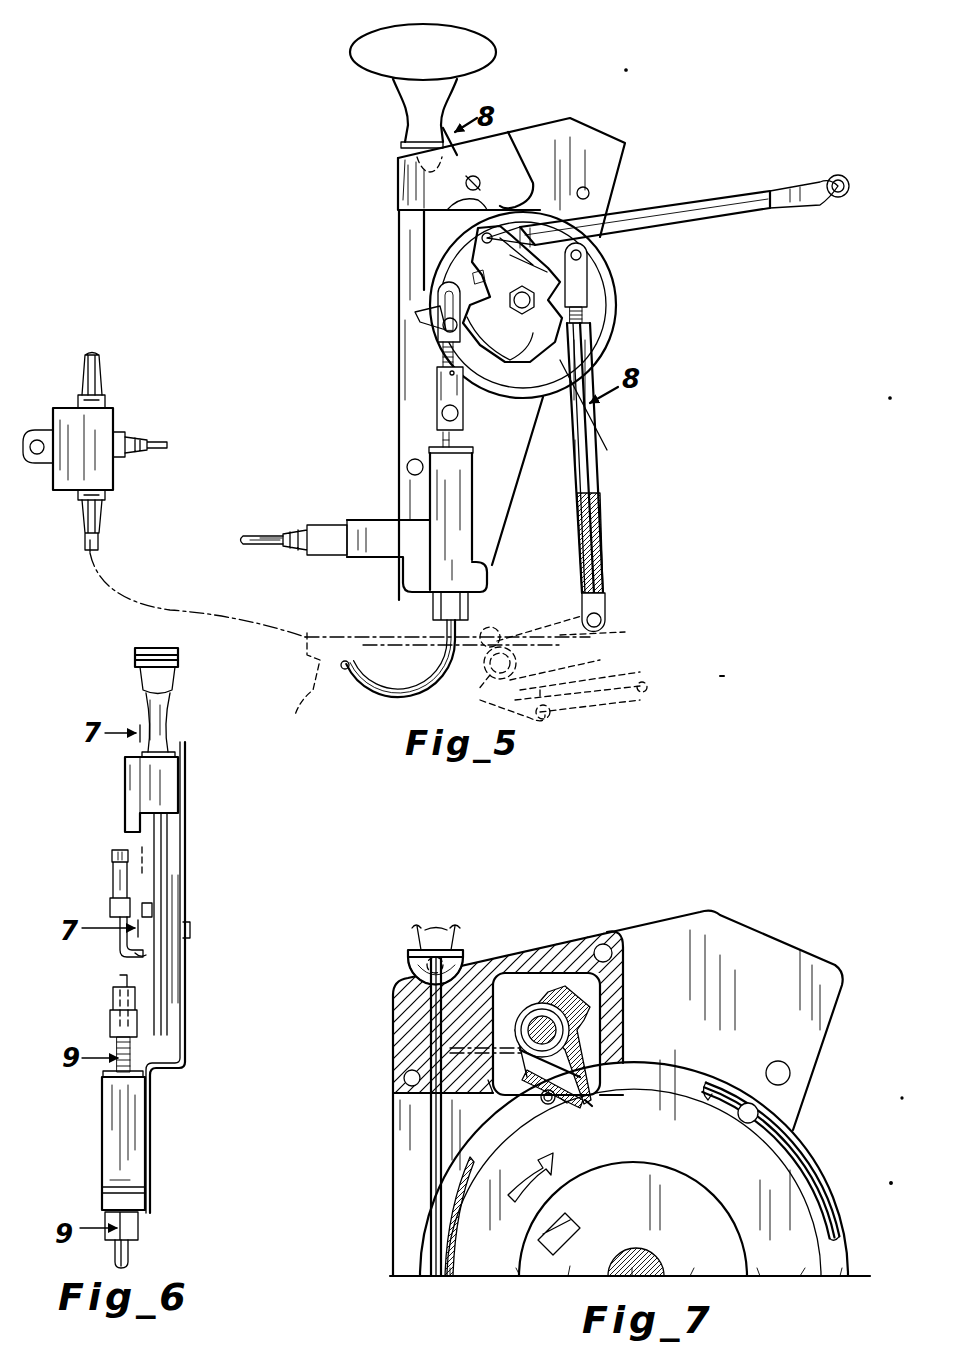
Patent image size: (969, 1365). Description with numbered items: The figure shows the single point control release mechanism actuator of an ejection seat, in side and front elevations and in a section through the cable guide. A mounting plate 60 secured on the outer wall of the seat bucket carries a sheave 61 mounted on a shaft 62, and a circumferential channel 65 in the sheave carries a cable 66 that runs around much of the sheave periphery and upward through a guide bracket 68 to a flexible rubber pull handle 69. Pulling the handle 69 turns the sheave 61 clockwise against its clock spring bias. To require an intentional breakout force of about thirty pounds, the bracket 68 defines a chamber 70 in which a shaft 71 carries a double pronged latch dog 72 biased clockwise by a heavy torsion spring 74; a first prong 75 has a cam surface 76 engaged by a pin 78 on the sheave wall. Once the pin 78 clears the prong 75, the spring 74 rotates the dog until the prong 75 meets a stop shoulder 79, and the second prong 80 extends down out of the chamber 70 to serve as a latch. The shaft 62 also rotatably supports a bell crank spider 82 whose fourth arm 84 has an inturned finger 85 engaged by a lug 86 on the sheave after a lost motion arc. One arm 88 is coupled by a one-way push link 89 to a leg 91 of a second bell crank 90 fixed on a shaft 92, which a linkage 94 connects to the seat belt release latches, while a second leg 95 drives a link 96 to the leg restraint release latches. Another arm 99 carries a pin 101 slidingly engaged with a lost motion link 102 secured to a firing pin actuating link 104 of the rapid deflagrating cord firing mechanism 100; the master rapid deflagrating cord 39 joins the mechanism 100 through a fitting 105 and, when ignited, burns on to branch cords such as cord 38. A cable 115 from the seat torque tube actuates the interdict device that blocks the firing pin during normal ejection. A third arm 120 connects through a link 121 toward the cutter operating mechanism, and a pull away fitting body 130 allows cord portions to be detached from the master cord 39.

In FIG. 5, the branch cord 38 is at (165, 444).
In FIG. 5, the master rapid deflagrating cord 39 is at (345, 662).
In FIG. 6, the master rapid deflagrating cord 39 is at (130, 1262).
In FIG. 5, the mounting plate 60 is at (612, 148).
In FIG. 7, the mounting plate 60 is at (770, 935).
In FIG. 5, the sheave 61 is at (616, 312).
In FIG. 6, the sheave 61 is at (180, 855).
In FIG. 7, the sheave 61 is at (800, 1140).
In FIG. 5, the shaft 62 is at (580, 290).
In FIG. 7, the shaft 62 is at (655, 1255).
In FIG. 7, the circumferential channel 65 is at (455, 1177).
In FIG. 5, the cable 66 is at (418, 230).
In FIG. 6, the cable 66 is at (170, 820).
In FIG. 7, the cable 66 is at (430, 1115).
In FIG. 5, the guide bracket 68 is at (420, 168).
In FIG. 6, the guide bracket 68 is at (165, 780).
In FIG. 5, the pull handle 69 is at (470, 43).
In FIG. 6, the pull handle 69 is at (170, 680).
In FIG. 7, the pull handle 69 is at (440, 930).
In FIG. 7, the chamber 70 is at (525, 976).
In FIG. 5, the shaft 71 is at (475, 175).
In FIG. 7, the shaft 71 is at (557, 1027).
In FIG. 7, the latch dog 72 is at (595, 1105).
In FIG. 7, the torsion spring 74 is at (570, 1030).
In FIG. 5, the first prong 75 is at (530, 170).
In FIG. 7, the first prong 75 is at (577, 1085).
In FIG. 5, the cam surface 76 is at (545, 200).
In FIG. 7, the cam surface 76 is at (567, 1105).
In FIG. 5, the pin 78 is at (450, 205).
In FIG. 7, the pin 78 is at (548, 1105).
In FIG. 7, the stop shoulder 79 is at (490, 1090).
In FIG. 7, the second prong 80 is at (565, 985).
In FIG. 5, the bell crank spider 82 is at (480, 265).
In FIG. 6, the bell crank spider 82 is at (108, 870).
In FIG. 5, the fourth arm 84 is at (540, 355).
In FIG. 6, the fourth arm 84 is at (120, 948).
In FIG. 6, the inturned finger 85 is at (146, 955).
In FIG. 7, the lug 86 is at (555, 1225).
In FIG. 5, the arm 88 is at (588, 270).
In FIG. 5, the one-way push link 89 is at (590, 480).
In FIG. 5, the second bell crank 90 is at (492, 628).
In FIG. 5, the leg 91 is at (615, 635).
In FIG. 5, the shaft 92 is at (486, 690).
In FIG. 5, the linkage 94 is at (298, 705).
In FIG. 5, the second leg 95 is at (570, 672).
In FIG. 5, the link 96 is at (608, 712).
In FIG. 5, the arm 99 is at (430, 315).
In FIG. 5, the rapid deflagrating cord firing mechanism 100 is at (460, 490).
In FIG. 6, the rapid deflagrating cord firing mechanism 100 is at (110, 1128).
In FIG. 5, the pin 101 is at (445, 328).
In FIG. 5, the lost motion link 102 is at (445, 297).
In FIG. 5, the firing pin actuating link 104 is at (437, 396).
In FIG. 6, the firing pin actuating link 104 is at (110, 993).
In FIG. 5, the fitting 105 is at (440, 615).
In FIG. 6, the fitting 105 is at (135, 1228).
In FIG. 5, the cable 115 is at (263, 532).
In FIG. 5, the third arm 120 is at (612, 212).
In FIG. 5, the link 121 is at (707, 203).
In FIG. 5, the fitting body 130 is at (110, 418).